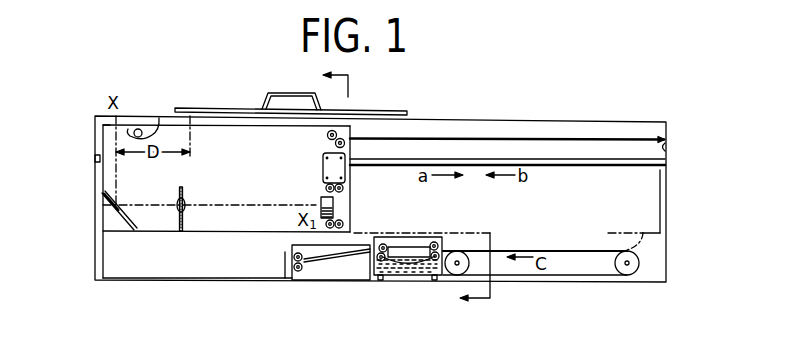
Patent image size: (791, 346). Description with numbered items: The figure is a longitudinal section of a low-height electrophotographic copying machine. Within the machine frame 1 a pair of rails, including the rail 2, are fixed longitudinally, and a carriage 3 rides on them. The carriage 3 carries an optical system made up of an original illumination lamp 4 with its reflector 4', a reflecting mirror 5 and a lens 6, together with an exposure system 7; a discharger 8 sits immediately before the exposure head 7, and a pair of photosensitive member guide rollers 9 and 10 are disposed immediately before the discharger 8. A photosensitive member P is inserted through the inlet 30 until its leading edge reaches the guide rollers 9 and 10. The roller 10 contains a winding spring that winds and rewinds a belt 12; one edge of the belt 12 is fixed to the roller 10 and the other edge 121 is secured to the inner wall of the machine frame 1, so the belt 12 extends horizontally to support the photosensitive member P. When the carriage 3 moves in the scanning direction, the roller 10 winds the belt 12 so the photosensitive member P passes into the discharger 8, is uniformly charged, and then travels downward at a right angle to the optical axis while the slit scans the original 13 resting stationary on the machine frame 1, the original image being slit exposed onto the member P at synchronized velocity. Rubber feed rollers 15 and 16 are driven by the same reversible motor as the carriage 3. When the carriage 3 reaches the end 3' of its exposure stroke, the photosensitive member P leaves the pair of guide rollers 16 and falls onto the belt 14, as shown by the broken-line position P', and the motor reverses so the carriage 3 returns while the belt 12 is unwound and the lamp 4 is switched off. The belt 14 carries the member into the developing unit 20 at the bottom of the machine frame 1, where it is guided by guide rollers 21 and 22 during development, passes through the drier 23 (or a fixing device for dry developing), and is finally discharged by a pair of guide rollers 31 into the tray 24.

The machine frame 1 is at (93, 131).
The rail 2 is at (613, 167).
The carriage 3 is at (226, 174).
The end of exposure stroke 3' is at (531, 210).
The original illumination lamp 4 is at (137, 108).
The reflector 4' is at (146, 108).
The reflecting mirror 5 is at (123, 213).
The lens 6 is at (186, 202).
The exposure system 7 is at (343, 208).
The discharger 8 is at (322, 166).
The photosensitive member guide roller 9 is at (327, 135).
The photosensitive member guide roller 10 is at (335, 143).
The belt 12 is at (622, 137).
The other edge of belt 121 is at (665, 148).
The original 13 is at (232, 108).
The belt 14 is at (551, 259).
The rubber feed roller 15 is at (326, 188).
The guide roller 16 is at (343, 224).
The developing unit 20 is at (420, 273).
The guide roller 21 is at (435, 242).
The guide roller 22 is at (386, 244).
The drier 23 is at (339, 281).
The tray 24 is at (227, 279).
The inlet 30 is at (476, 121).
The guide roller 31 is at (294, 258).
The photosensitive member P is at (448, 110).
The photosensitive member position P' is at (636, 257).